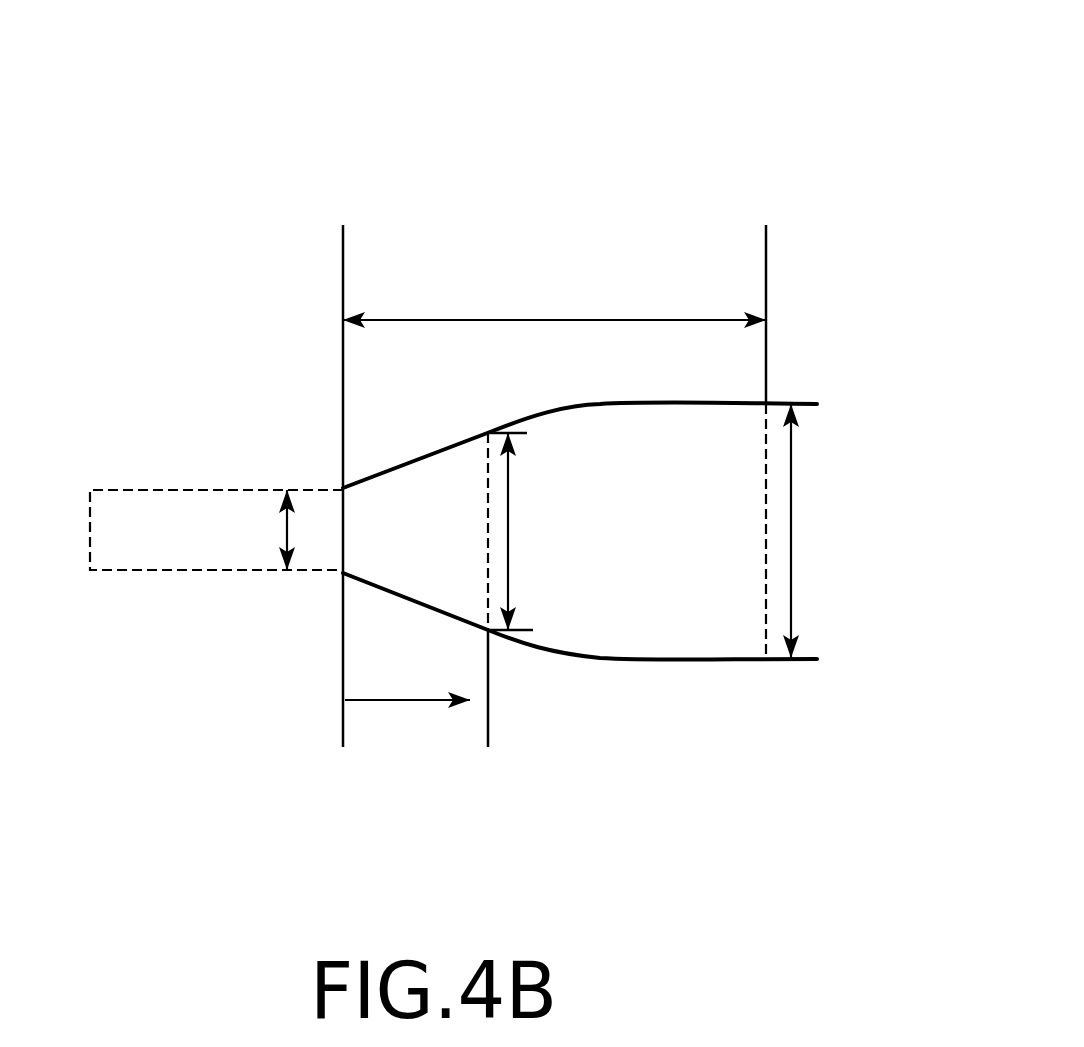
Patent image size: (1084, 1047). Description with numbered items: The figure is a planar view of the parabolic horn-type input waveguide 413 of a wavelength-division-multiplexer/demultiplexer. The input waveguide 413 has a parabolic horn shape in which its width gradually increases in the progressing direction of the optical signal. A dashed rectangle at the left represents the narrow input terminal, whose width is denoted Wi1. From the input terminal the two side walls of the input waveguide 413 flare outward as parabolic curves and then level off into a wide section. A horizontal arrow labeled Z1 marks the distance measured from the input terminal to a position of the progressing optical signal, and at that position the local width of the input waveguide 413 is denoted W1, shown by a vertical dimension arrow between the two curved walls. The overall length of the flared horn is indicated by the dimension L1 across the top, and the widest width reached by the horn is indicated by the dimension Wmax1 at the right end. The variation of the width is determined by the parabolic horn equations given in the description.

The input waveguide 413 is at (810, 59).
The taper length L1 is at (553, 318).
The width of the input waveguide at the signal position W1 is at (510, 533).
The width of the input waveguide at the input terminal Wi1 is at (285, 533).
The maximum taper width Wmax1 is at (792, 533).
The measured distance from the input terminal Z1 is at (407, 716).